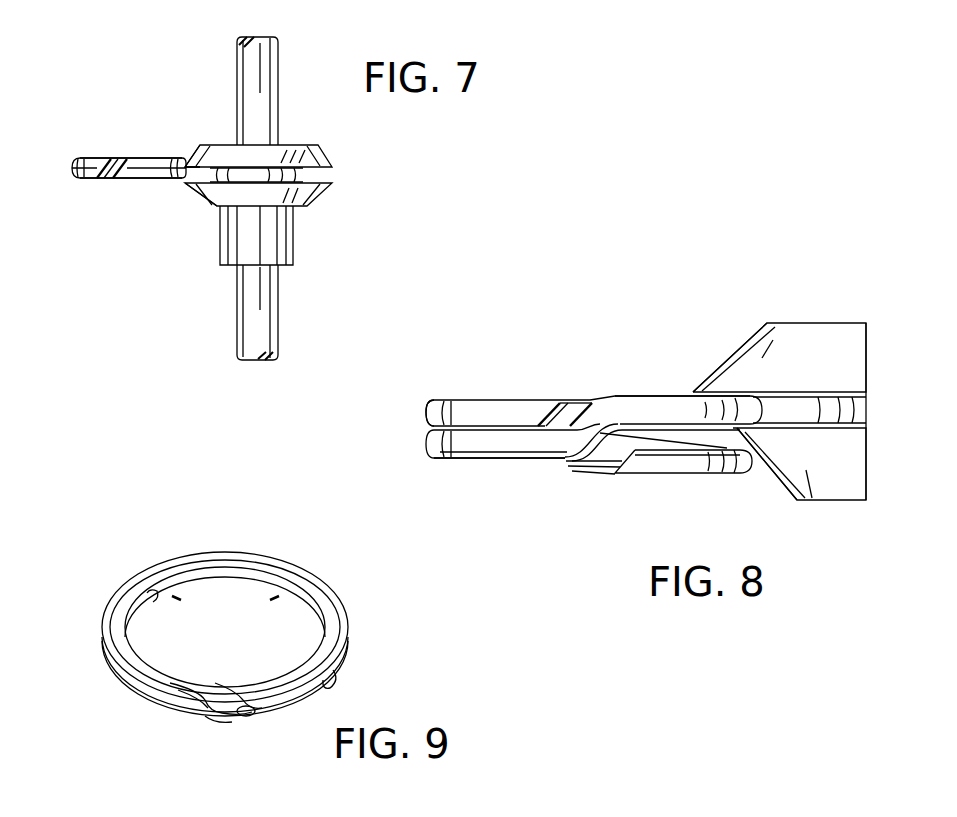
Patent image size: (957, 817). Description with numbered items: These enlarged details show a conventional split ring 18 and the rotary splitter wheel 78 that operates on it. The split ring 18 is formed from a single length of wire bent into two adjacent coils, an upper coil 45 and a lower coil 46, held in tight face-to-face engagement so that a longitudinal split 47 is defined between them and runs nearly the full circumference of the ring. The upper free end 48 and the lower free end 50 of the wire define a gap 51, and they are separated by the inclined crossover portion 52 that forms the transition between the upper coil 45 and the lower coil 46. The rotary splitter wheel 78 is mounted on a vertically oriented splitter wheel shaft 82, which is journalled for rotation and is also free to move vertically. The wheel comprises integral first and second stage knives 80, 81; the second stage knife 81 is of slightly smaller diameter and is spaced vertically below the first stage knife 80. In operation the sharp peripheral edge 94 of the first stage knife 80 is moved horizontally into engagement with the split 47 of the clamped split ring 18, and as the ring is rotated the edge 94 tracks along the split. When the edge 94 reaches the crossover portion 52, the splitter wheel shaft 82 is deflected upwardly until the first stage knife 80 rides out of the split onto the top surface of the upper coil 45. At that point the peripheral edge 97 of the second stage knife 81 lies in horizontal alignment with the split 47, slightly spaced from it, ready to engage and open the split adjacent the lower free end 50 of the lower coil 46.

In FIG. 7, the split ring 18 is at (110, 155).
In FIG. 8, the split ring 18 is at (552, 388).
In FIG. 9, the split ring 18 is at (232, 546).
In FIG. 7, the upper coil 45 is at (92, 158).
In FIG. 8, the upper coil 45 is at (648, 404).
In FIG. 9, the upper coil 45 is at (310, 582).
In FIG. 7, the lower coil 46 is at (90, 180).
In FIG. 8, the lower coil 46 is at (483, 440).
In FIG. 9, the lower coil 46 is at (115, 670).
In FIG. 7, the longitudinal split 47 is at (145, 181).
In FIG. 8, the longitudinal split 47 is at (467, 399).
In FIG. 9, the longitudinal split 47 is at (158, 594).
In FIG. 8, the upper free end 48 is at (545, 420).
In FIG. 9, the upper free end 48 is at (217, 685).
In FIG. 8, the lower free end 50 is at (627, 450).
In FIG. 9, the lower free end 50 is at (243, 717).
In FIG. 8, the gap 51 is at (580, 403).
In FIG. 9, the gap 51 is at (230, 723).
In FIG. 8, the crossover portion 52 is at (577, 442).
In FIG. 9, the crossover portion 52 is at (232, 687).
In FIG. 7, the rotary splitter wheel 78 is at (299, 142).
In FIG. 8, the rotary splitter wheel 78 is at (847, 315).
In FIG. 7, the first stage knife 80 is at (223, 153).
In FIG. 8, the first stage knife 80 is at (803, 343).
In FIG. 7, the second stage knife 81 is at (308, 193).
In FIG. 8, the second stage knife 81 is at (837, 493).
In FIG. 7, the splitter wheel shaft 82 is at (260, 332).
In FIG. 7, the sharp peripheral edge of the first stage knife 94 is at (183, 162).
In FIG. 8, the sharp peripheral edge of the first stage knife 94 is at (695, 391).
In FIG. 7, the peripheral edge of the second stage knife 97 is at (193, 184).
In FIG. 8, the peripheral edge of the second stage knife 97 is at (727, 434).